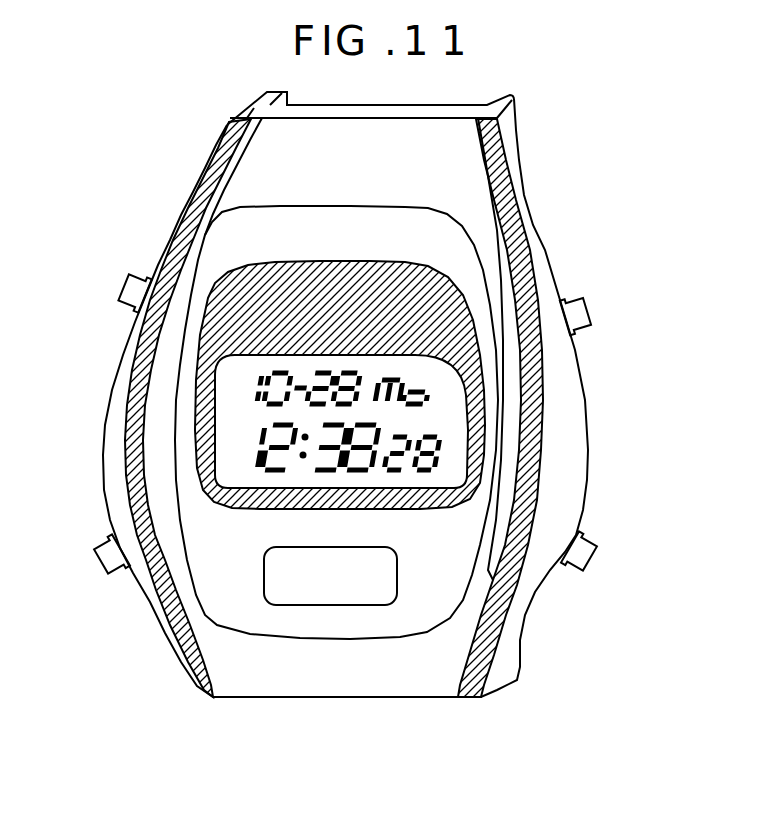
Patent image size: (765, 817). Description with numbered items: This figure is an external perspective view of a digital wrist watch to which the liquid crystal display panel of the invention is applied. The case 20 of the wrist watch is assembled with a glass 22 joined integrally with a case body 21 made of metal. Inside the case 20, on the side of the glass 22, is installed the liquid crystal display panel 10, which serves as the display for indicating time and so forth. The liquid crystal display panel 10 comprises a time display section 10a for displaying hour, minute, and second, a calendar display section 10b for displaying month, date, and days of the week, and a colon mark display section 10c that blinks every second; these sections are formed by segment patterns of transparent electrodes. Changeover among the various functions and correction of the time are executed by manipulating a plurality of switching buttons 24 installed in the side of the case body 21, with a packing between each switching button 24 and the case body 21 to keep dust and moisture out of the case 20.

The case 20 is at (161, 183).
The case body 21 is at (576, 428).
The glass 22 is at (452, 233).
The liquid crystal display panel 10 is at (335, 501).
The time display section 10a is at (351, 485).
The calendar display section 10b is at (374, 360).
The colon mark display section 10c is at (297, 473).
The switching buttons 24 is at (124, 290).